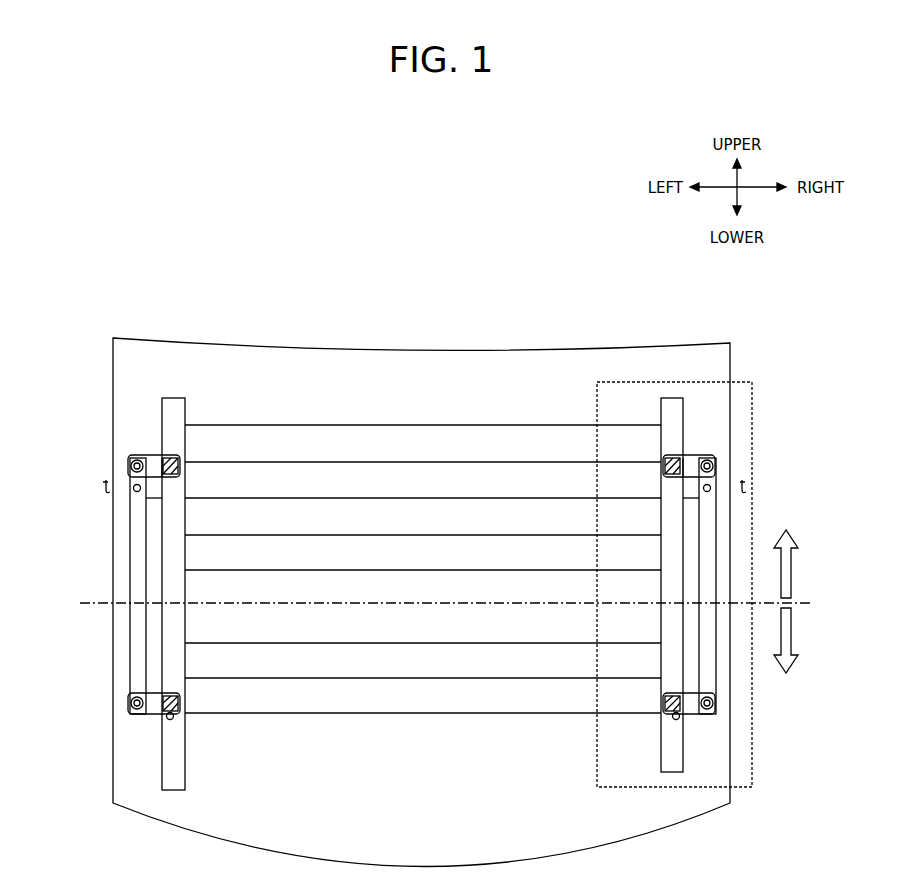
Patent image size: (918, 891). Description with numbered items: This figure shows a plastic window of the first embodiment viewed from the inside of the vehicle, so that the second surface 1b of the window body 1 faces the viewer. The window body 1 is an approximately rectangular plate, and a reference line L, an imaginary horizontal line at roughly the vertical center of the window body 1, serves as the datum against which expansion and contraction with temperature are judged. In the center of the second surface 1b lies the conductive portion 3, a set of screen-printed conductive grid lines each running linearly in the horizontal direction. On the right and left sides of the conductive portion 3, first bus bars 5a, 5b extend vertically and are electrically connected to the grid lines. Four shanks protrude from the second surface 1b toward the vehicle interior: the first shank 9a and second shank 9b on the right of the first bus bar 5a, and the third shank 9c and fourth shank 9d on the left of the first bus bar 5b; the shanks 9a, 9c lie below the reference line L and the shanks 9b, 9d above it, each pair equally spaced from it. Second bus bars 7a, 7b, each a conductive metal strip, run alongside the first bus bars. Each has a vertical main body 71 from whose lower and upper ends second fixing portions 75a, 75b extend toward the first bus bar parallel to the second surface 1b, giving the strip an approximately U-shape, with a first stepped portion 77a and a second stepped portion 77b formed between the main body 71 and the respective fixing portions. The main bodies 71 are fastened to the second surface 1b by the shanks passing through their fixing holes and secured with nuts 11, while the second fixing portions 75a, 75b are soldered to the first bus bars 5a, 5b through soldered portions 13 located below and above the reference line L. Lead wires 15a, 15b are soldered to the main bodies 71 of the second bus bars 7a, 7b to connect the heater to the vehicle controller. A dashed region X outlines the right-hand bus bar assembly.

The window body 1 is at (522, 347).
The second surface 1b is at (430, 840).
The conductive portion 3 is at (339, 424).
The first bus bar 5a is at (671, 406).
The first bus bar 5b is at (175, 406).
The second bus bar 7a is at (702, 718).
The second bus bar 7b is at (142, 718).
The first shank 9a is at (713, 704).
The second shank 9b is at (713, 466).
The third shank 9c is at (131, 704).
The fourth shank 9d is at (131, 466).
The nut 11 is at (132, 460).
The soldered portion 13 is at (182, 456).
The lead wire 15a is at (699, 508).
The lead wire 15b is at (146, 508).
The main body 71 is at (146, 535).
The second fixing portion 75a is at (182, 703).
The second fixing portion 75b is at (182, 474).
The first stepped portion 77a is at (175, 790).
The second stepped portion 77b is at (165, 460).
The reference line L is at (435, 604).
The region X is at (742, 382).